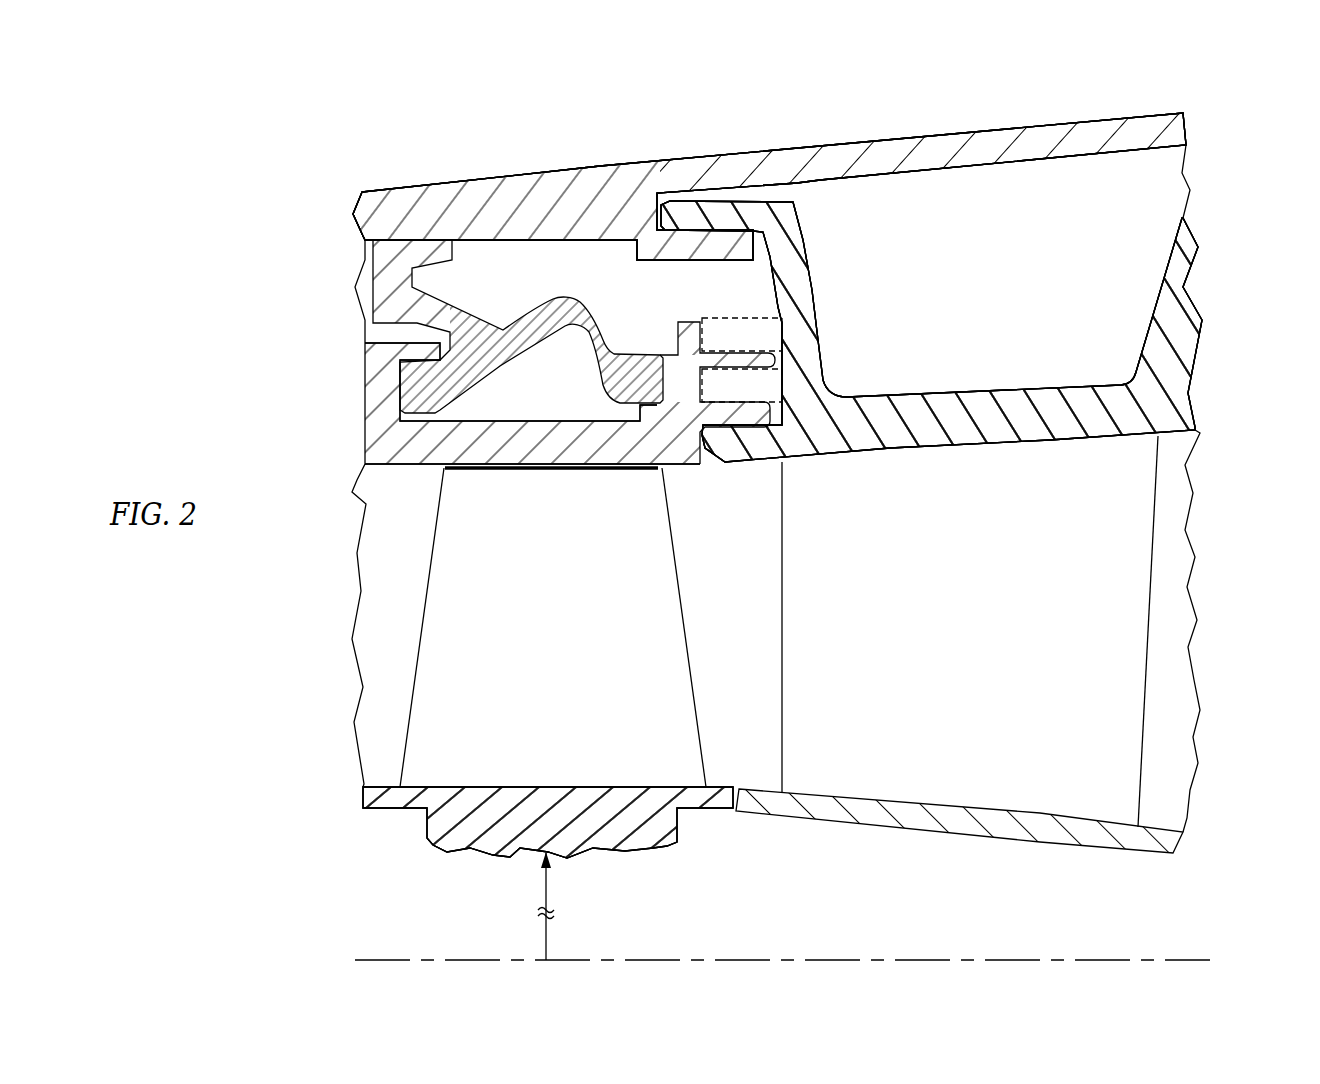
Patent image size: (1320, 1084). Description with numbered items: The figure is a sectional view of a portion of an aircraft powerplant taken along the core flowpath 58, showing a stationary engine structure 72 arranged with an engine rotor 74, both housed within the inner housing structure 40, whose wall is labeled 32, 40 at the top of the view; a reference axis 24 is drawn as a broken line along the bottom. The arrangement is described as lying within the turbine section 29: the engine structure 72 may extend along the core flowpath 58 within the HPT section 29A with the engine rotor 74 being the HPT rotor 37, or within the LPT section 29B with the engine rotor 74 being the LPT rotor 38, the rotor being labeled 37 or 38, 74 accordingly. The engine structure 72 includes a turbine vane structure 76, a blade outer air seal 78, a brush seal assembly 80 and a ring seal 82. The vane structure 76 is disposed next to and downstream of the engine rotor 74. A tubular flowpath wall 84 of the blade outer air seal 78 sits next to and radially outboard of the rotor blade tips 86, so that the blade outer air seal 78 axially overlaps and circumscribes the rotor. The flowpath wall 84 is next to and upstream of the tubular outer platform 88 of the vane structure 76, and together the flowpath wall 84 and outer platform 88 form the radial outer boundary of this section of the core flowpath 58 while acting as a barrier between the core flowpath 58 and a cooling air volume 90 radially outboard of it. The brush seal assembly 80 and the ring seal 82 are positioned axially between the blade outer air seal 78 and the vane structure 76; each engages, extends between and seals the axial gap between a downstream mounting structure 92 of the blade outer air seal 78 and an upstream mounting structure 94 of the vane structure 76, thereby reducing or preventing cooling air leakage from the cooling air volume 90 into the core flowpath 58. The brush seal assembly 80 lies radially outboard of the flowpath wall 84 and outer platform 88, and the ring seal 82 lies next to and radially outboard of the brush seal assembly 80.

The engine centerline axis 24 is at (383, 957).
The turbine section 29 is at (754, 117).
The HPT section 29A is at (769, 186).
The LPT section 29B is at (769, 186).
The outer casing 32 is at (1180, 103).
The inner housing structure 40 is at (769, 186).
The HPT rotor 37 is at (390, 828).
The LPT rotor 38 is at (548, 822).
The core flowpath 58 is at (367, 597).
The engine structure 72 is at (1220, 220).
The engine rotor 74 is at (548, 822).
The turbine vane structure 76 is at (1207, 344).
The blade outer air seal 78 is at (347, 425).
The brush seal assembly 80 is at (787, 382).
The ring seal 82 is at (787, 330).
The flowpath wall 84 is at (411, 452).
The rotor blade tips 86 is at (518, 464).
The outer platform 88 is at (1165, 411).
The cooling air volume 90 is at (673, 302).
The mounting structure 92 is at (660, 345).
The mounting structure 94 is at (819, 280).